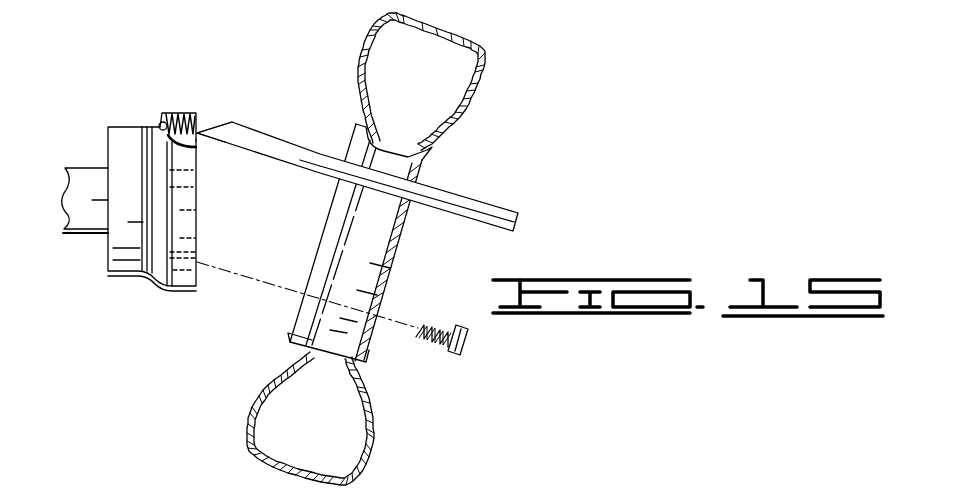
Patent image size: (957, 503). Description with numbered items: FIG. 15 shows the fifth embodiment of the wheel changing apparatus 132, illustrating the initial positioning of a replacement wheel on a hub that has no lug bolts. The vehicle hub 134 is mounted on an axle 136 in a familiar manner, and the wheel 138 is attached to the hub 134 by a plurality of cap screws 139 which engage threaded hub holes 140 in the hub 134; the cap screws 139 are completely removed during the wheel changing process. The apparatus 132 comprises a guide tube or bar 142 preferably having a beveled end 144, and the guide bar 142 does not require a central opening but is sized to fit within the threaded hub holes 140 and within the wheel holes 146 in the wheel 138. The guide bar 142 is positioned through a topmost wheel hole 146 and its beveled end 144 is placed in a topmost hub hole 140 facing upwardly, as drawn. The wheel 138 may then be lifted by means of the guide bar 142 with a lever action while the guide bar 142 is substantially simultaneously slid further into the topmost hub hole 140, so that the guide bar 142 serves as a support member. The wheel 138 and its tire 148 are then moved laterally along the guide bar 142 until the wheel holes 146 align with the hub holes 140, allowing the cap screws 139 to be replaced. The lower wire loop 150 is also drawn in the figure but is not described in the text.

The wheel changing apparatus 132 is at (503, 133).
The vehicle hub 134 is at (130, 134).
The axle 136 is at (88, 180).
The wheel 138 is at (392, 268).
The cap screws 139 is at (467, 342).
The threaded hub holes 140 is at (155, 127).
The guide bar 142 is at (246, 129).
The beveled end 144 is at (205, 128).
The wheel holes 146 is at (428, 188).
The tire 148 is at (483, 77).
The lower wire loop 150 is at (530, 502).